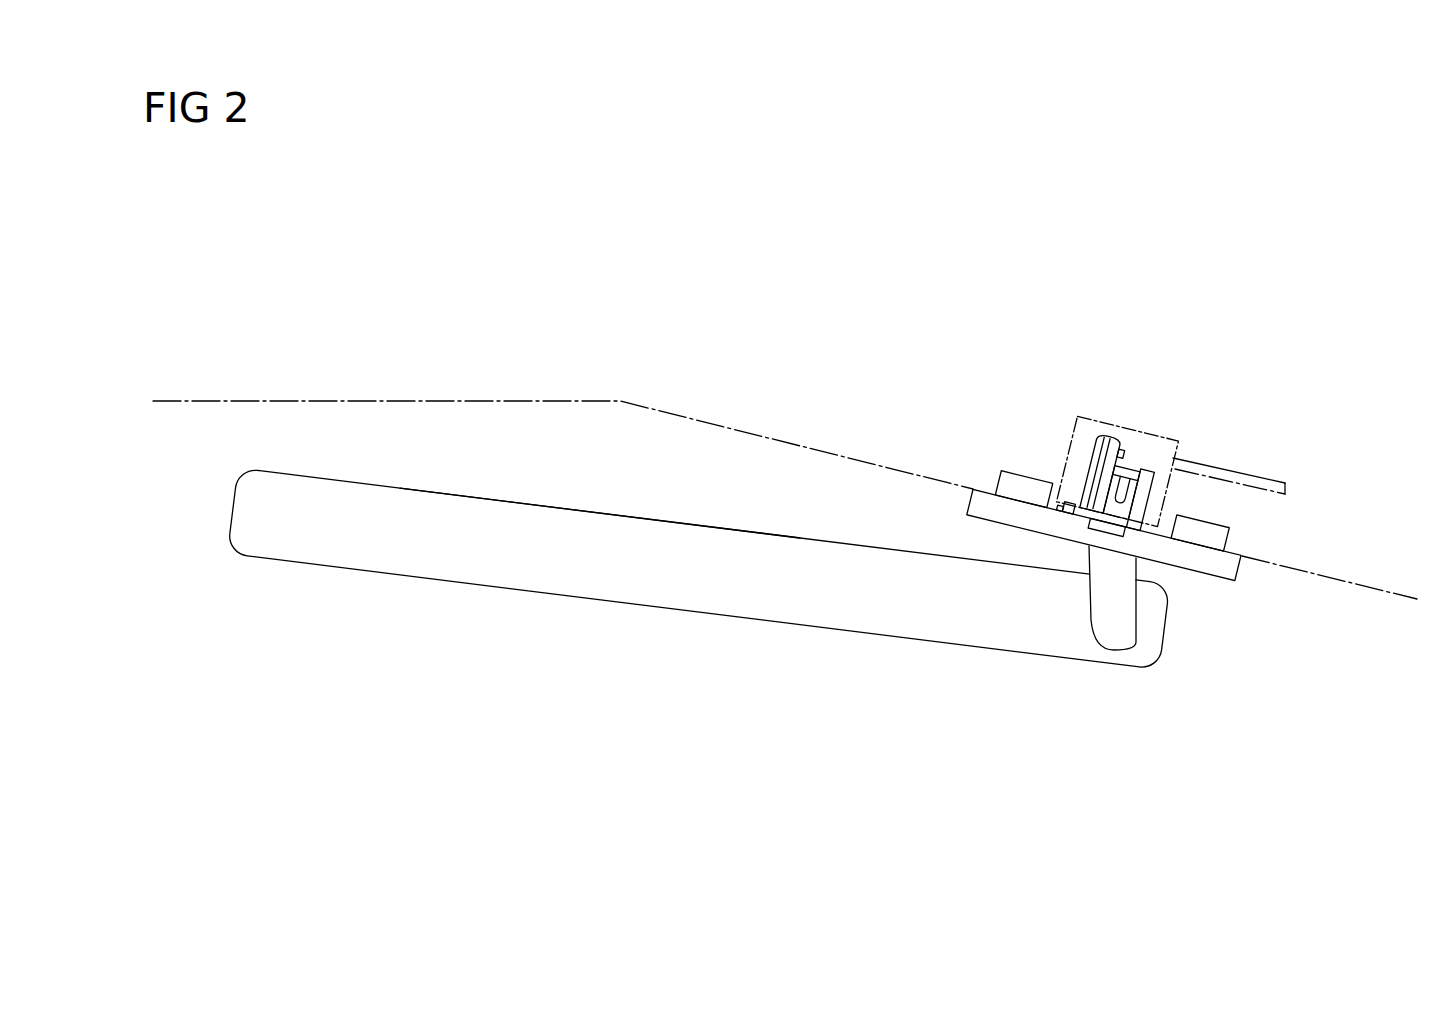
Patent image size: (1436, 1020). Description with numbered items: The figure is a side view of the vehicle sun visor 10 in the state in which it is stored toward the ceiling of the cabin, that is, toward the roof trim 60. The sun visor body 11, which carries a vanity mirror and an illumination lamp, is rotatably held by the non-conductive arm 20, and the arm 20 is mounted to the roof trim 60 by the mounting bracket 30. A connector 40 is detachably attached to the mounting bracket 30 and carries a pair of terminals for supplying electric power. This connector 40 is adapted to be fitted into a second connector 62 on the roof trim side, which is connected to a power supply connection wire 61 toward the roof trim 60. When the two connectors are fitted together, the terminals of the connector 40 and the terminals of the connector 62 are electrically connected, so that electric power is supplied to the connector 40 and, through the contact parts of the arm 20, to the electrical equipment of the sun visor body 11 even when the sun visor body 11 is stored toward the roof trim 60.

The vehicle sun visor 10 is at (776, 630).
The sun visor body 11 is at (580, 509).
The arm 20 is at (1102, 607).
The mounting bracket 30 is at (1230, 550).
The connector 40 is at (1087, 460).
The roof trim 60 is at (296, 403).
The power supply connection wire 61 is at (1217, 467).
The connector 62 is at (1142, 431).